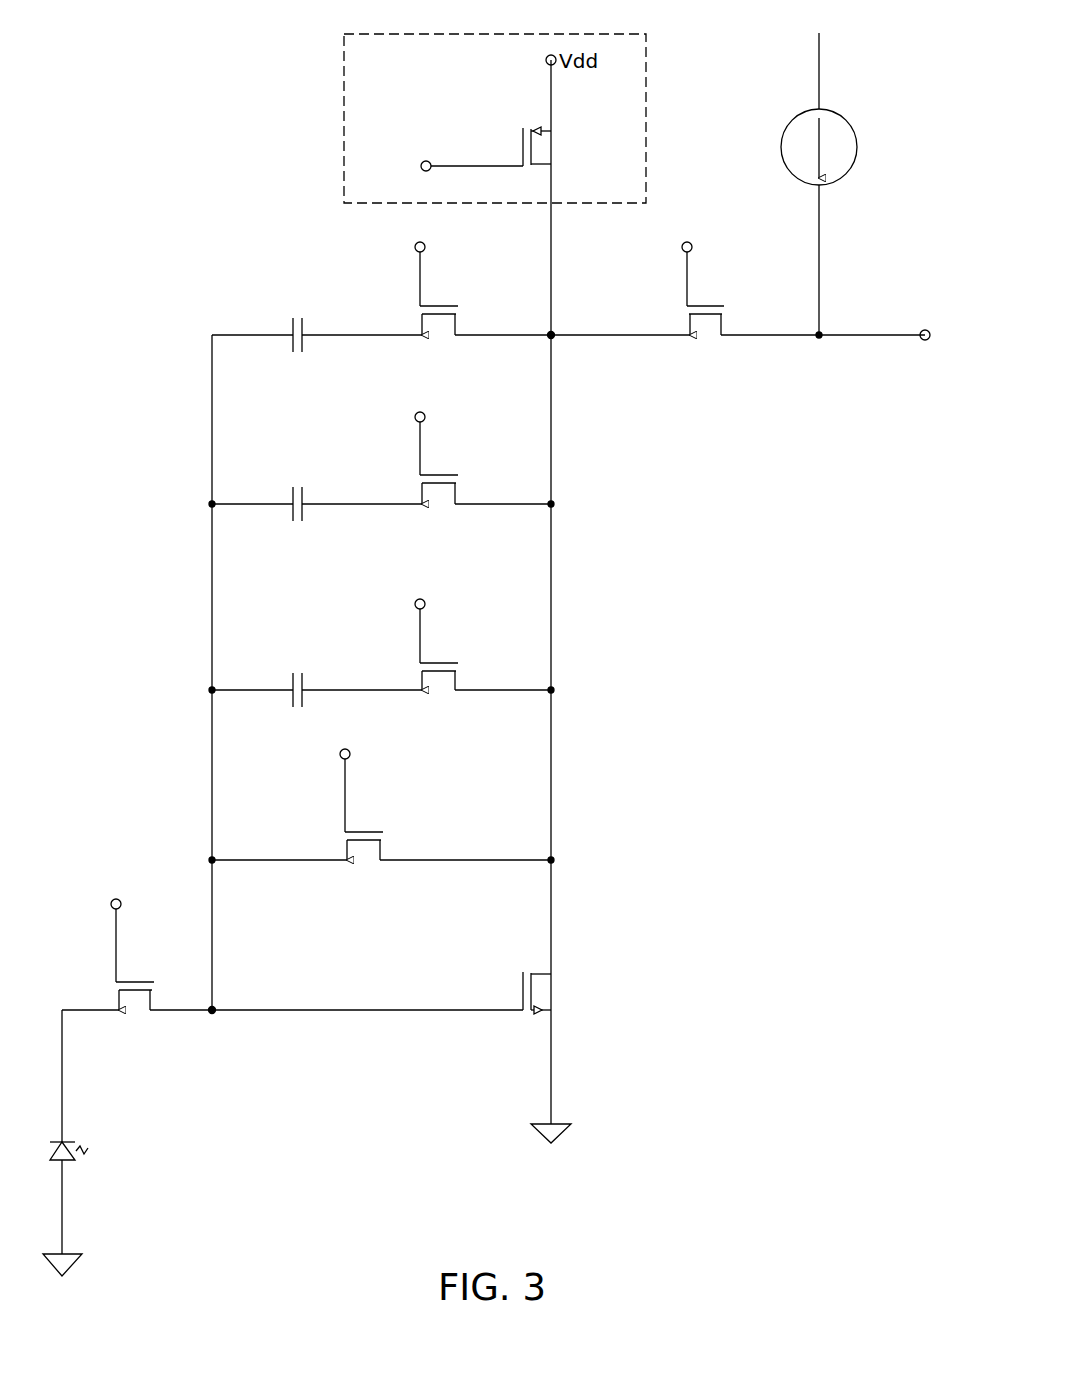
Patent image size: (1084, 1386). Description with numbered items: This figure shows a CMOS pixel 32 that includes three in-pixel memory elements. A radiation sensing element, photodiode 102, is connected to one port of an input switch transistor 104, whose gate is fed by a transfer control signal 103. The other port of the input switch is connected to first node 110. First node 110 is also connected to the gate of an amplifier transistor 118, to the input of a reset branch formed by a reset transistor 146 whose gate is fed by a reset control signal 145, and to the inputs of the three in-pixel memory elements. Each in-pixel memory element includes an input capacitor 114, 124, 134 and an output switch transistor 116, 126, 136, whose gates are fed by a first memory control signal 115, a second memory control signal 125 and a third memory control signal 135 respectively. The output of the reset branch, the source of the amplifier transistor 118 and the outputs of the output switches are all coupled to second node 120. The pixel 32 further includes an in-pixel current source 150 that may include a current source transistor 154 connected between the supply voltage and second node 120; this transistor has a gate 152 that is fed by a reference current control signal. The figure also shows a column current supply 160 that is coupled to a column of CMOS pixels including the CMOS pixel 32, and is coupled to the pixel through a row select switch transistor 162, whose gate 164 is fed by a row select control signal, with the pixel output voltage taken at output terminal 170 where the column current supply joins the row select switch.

The CMOS pixel 32 is at (331, 1182).
The photodiode 102 is at (114, 1156).
The control signal Vtx 103 is at (112, 906).
The CMOS transistor Q1 104 is at (144, 1034).
The first node 110 is at (215, 1014).
The input capacitor 114 is at (310, 366).
The control signal Vmem1 115 is at (416, 252).
The CMOS transistor Q2 116 is at (446, 356).
The amplifier CMOS transistor Q6 118 is at (578, 998).
The second node 120 is at (555, 340).
The input capacitor 124 is at (304, 536).
The control signal Vmem2 125 is at (415, 420).
The CMOS transistor Q3 126 is at (450, 524).
The input capacitor 134 is at (292, 722).
The control signal Vmem3 135 is at (415, 608).
The CMOS transistor Q4 136 is at (450, 708).
The control signal Vreset 145 is at (340, 757).
The reset CMOS transistor Q5 146 is at (374, 882).
The in-pixel current source 150 is at (394, 67).
The gate 152 is at (421, 168).
The current source CMOS transistor Q8 154 is at (562, 158).
The column current supply I1 160 is at (866, 158).
The row select CMOS transistor Q7 162 is at (702, 354).
The gate 164 is at (683, 252).
The Vout output terminal 170 is at (924, 340).